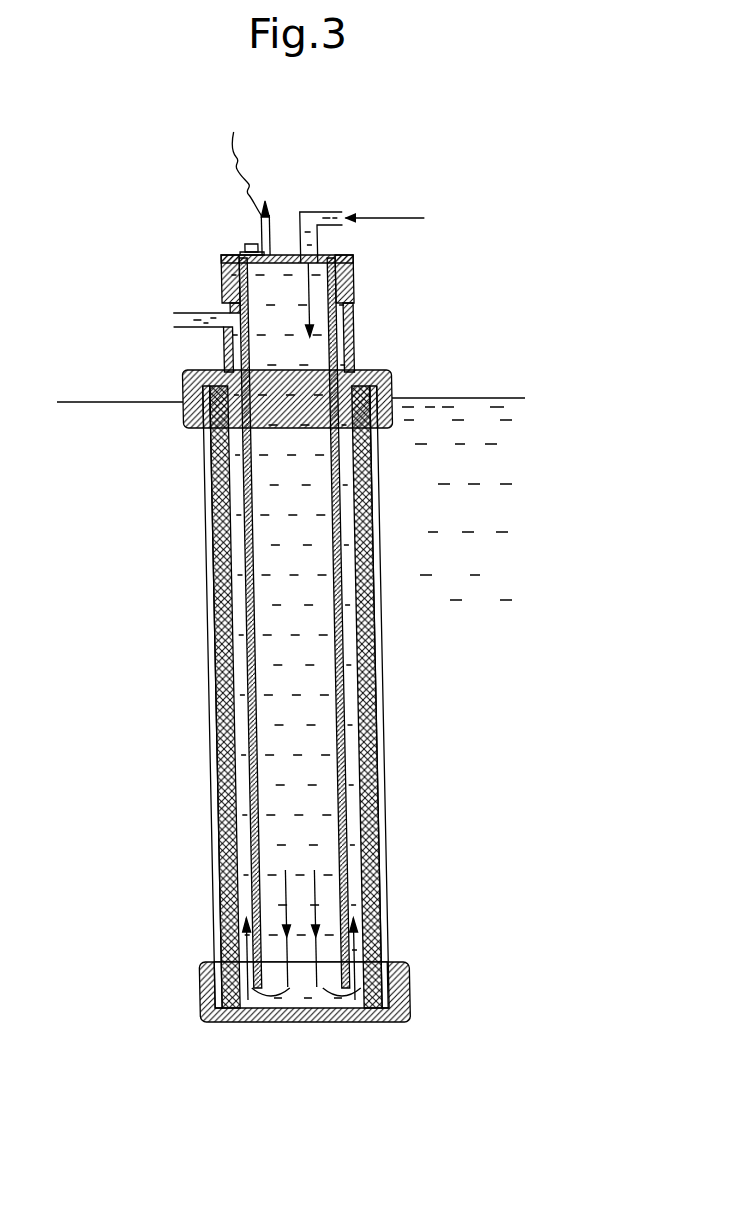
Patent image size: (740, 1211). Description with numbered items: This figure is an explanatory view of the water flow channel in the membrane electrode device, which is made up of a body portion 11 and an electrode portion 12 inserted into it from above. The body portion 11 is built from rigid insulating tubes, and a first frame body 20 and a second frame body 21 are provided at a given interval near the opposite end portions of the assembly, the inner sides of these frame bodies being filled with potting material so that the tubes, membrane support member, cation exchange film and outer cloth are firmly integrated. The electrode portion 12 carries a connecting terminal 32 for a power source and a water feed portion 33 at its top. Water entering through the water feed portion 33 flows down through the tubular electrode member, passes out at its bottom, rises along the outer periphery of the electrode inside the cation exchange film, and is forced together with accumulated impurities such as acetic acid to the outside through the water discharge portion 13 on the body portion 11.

The body portion 11 is at (359, 336).
The electrode portion 12 is at (346, 546).
The water discharge portion 13 is at (187, 312).
The first frame body 20 is at (186, 378).
The second frame body 21 is at (200, 987).
The connecting terminal 32 is at (270, 230).
The water feed portion 33 is at (321, 211).